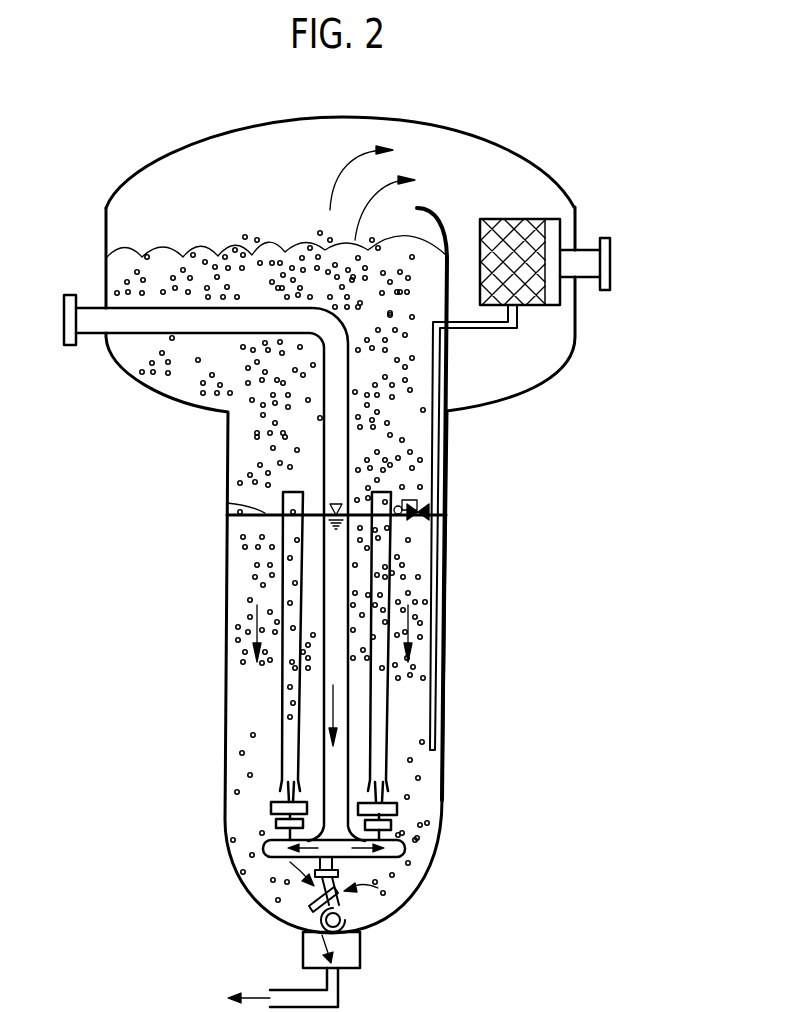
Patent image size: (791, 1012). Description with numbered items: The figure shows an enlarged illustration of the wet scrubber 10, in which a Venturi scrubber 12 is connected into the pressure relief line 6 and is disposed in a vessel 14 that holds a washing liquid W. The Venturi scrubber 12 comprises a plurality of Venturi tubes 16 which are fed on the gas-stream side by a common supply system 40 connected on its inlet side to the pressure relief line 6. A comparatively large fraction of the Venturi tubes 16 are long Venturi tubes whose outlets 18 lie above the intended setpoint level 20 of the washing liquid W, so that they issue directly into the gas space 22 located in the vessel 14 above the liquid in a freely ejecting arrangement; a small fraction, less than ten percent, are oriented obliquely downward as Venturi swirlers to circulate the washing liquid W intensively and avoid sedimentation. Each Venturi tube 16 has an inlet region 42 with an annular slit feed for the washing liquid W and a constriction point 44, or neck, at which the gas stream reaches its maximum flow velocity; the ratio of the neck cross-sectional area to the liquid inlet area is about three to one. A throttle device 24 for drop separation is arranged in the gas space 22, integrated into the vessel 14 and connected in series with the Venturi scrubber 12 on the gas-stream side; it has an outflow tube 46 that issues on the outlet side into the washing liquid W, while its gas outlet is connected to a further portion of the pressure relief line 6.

The wet scrubber 10 is at (449, 130).
The gas space 22 is at (281, 148).
The throttle device 24 is at (513, 219).
The pressure relief line 6 is at (588, 249).
The setpoint level 20 is at (267, 513).
The vessel 14 is at (443, 511).
The outflow tube 46 is at (440, 443).
The washing liquid W is at (418, 715).
The Venturi tubes 16 is at (280, 530).
The outlets 18 is at (380, 491).
The Venturi scrubber 12 is at (287, 747).
The constriction point 44 is at (282, 781).
The inlet region 42 is at (387, 788).
The common supply system 40 is at (405, 850).